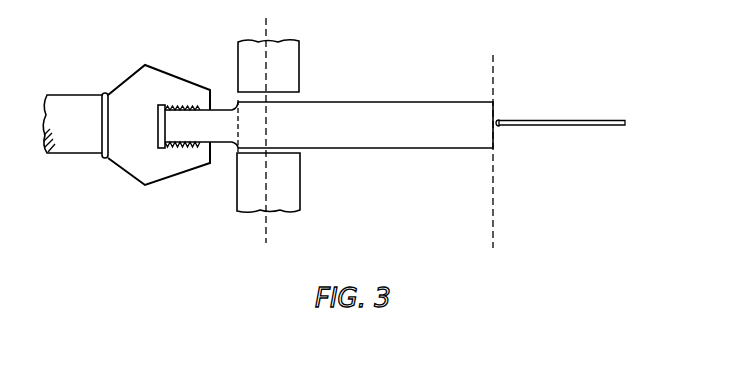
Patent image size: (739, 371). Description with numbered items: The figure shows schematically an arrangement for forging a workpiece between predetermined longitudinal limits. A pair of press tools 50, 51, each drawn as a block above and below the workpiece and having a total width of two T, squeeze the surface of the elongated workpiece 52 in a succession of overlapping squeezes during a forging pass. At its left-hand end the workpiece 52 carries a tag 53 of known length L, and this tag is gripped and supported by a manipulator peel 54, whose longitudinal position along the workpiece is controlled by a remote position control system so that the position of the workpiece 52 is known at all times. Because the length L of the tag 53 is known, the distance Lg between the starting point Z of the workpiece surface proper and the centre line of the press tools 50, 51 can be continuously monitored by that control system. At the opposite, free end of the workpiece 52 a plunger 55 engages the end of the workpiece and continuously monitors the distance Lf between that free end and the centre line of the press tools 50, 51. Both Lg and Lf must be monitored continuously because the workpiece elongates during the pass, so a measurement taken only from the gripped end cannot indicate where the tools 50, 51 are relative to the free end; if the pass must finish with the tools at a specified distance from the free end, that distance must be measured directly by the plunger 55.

The press tool 50 is at (300, 67).
The press tool 51 is at (293, 168).
The workpiece 52 is at (365, 99).
The tag 53 is at (218, 145).
The manipulator peel 54 is at (127, 163).
The plunger 55 is at (557, 119).
The length of the tag L is at (165, 127).
The distance Lg is at (238, 127).
The distance Lf is at (266, 230).
The half-width of press tools T is at (266, 72).
The starting point of the workpiece surface proper Z is at (237, 100).